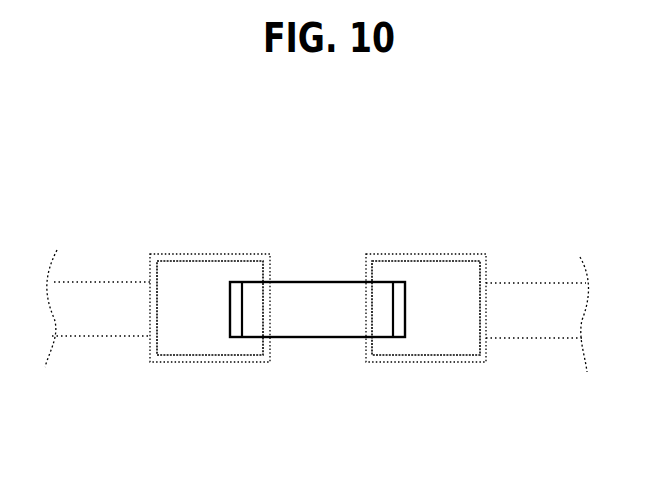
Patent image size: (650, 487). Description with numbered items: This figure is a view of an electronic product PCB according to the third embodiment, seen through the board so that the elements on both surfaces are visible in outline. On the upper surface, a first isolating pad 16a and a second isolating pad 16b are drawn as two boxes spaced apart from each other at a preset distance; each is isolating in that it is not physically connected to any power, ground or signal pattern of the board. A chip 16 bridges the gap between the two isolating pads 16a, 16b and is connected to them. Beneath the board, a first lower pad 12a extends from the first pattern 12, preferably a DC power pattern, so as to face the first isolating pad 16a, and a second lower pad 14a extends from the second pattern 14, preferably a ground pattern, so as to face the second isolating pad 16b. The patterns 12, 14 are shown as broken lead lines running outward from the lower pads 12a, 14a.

The first pattern 12 is at (98, 327).
The first lower pad 12a is at (223, 362).
The second pattern 14 is at (527, 328).
The second lead end portion 14a is at (448, 365).
The semiconductor chip 16 is at (319, 303).
The first isolating pad 16a is at (192, 273).
The second isolating pad 16b is at (443, 272).